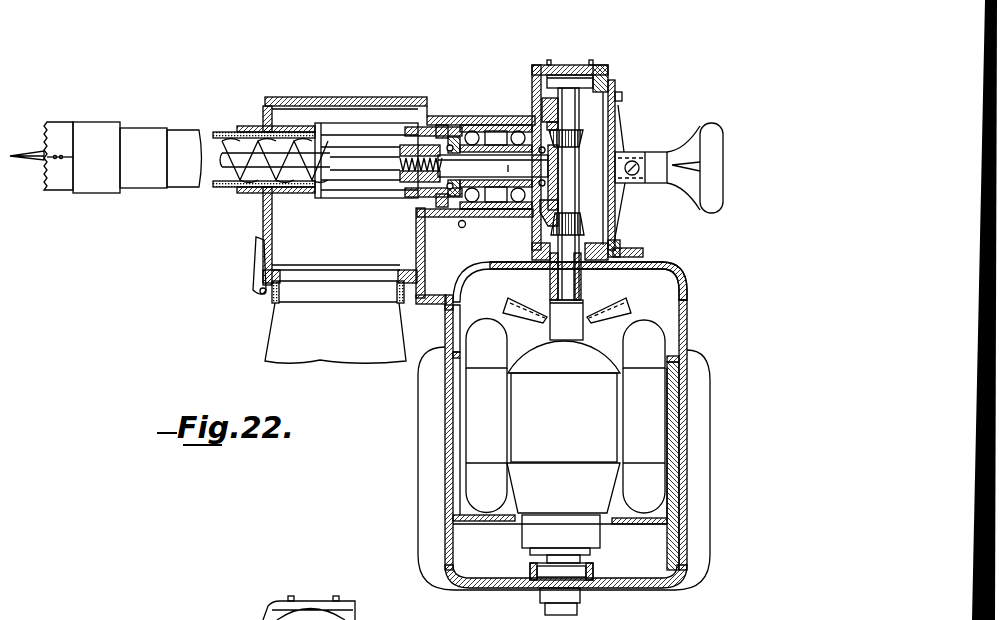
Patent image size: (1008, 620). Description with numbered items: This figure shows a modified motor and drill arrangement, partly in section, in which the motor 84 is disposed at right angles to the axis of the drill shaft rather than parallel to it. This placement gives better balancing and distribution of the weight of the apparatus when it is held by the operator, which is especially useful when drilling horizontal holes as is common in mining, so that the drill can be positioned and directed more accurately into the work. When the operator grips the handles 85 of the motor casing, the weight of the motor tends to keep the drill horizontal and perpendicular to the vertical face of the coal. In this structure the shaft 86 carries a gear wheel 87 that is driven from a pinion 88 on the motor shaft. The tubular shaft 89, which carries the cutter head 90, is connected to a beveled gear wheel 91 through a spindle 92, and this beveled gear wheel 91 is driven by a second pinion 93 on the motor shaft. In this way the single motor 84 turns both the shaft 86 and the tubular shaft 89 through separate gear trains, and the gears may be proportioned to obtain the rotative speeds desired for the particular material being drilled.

The motor 84 is at (649, 382).
The handles 85 is at (492, 188).
The shaft 86 is at (334, 158).
The gear wheel 87 is at (562, 180).
The pinion 88 is at (581, 138).
The tubular shaft 89 is at (181, 131).
The cutter head 90 is at (94, 128).
The beveled gear wheel 91 is at (530, 117).
The spindle 92 is at (450, 138).
The pinion 93 is at (590, 226).